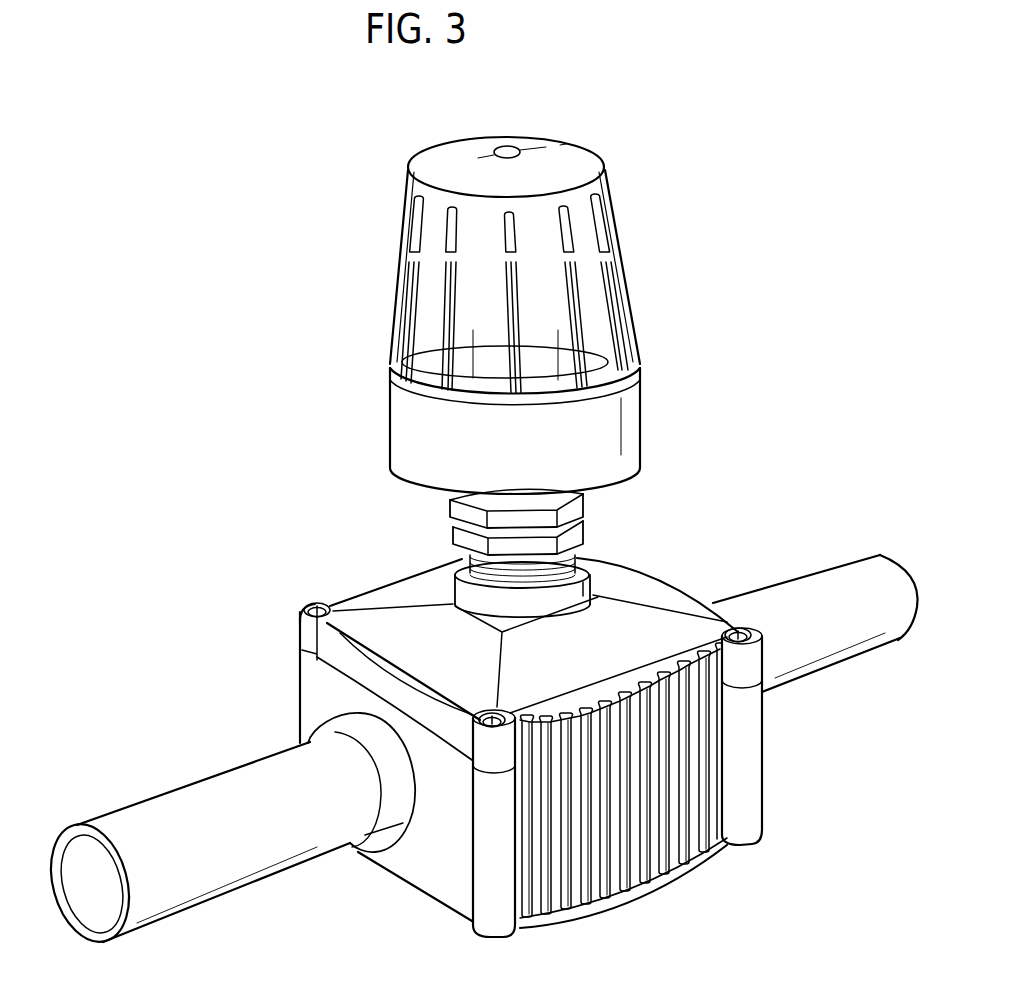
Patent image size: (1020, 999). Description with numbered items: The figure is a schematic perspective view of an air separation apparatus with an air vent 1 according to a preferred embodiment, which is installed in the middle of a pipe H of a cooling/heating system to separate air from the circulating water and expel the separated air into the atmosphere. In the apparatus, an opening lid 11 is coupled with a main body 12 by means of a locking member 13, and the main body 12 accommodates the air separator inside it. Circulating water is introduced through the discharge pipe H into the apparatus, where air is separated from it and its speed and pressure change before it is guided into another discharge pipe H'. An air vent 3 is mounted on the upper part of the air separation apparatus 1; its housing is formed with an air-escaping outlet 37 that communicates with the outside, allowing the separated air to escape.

The air separation apparatus with an air vent 1 is at (684, 573).
The air vent 3 is at (624, 192).
The air-escaping outlet 37 is at (511, 146).
The opening lid 11 is at (375, 597).
The main body 12 is at (418, 873).
The locking member 13 is at (310, 607).
The pipe H is at (194, 858).
The discharge pipe H' is at (815, 642).